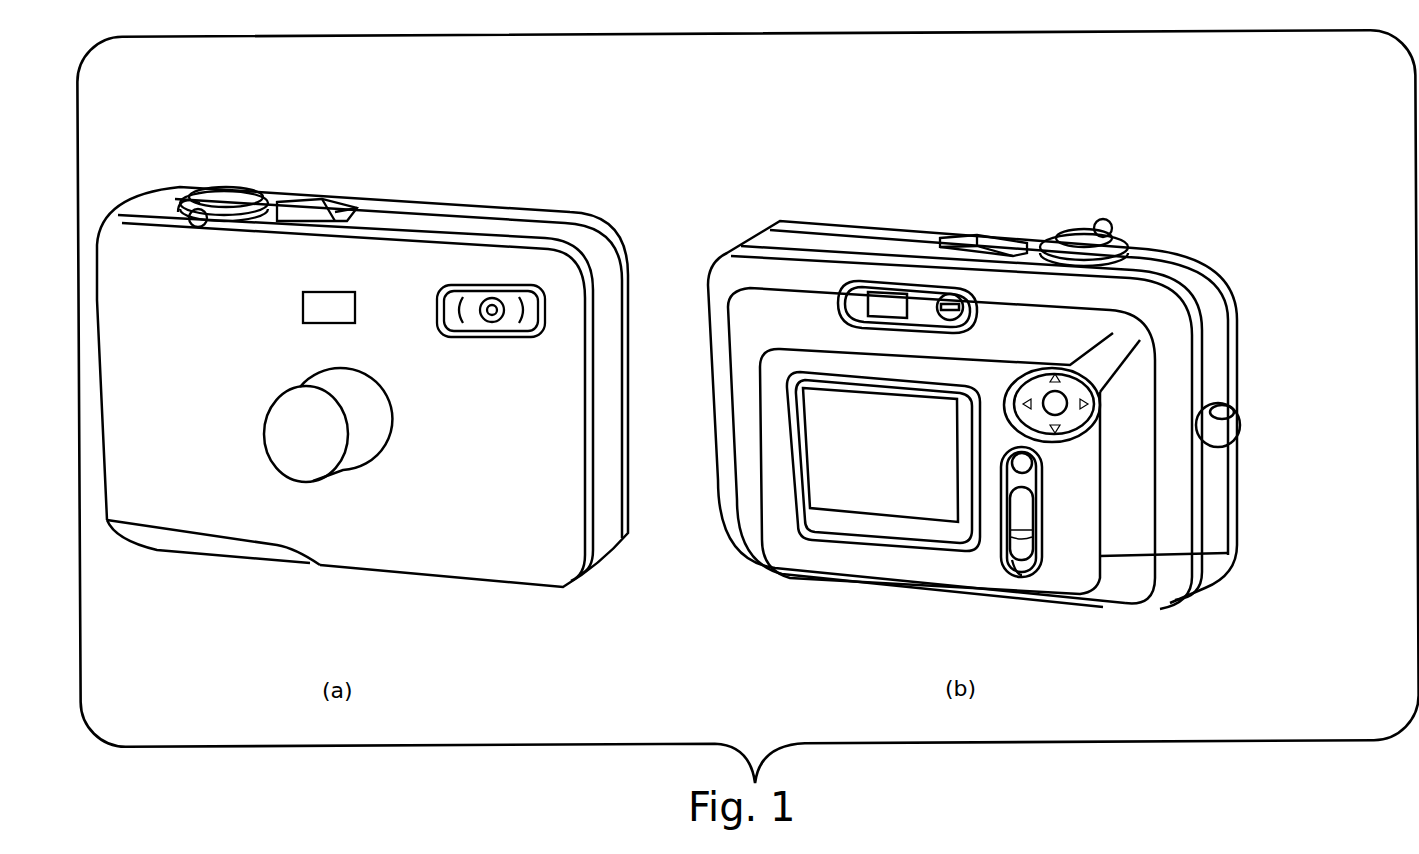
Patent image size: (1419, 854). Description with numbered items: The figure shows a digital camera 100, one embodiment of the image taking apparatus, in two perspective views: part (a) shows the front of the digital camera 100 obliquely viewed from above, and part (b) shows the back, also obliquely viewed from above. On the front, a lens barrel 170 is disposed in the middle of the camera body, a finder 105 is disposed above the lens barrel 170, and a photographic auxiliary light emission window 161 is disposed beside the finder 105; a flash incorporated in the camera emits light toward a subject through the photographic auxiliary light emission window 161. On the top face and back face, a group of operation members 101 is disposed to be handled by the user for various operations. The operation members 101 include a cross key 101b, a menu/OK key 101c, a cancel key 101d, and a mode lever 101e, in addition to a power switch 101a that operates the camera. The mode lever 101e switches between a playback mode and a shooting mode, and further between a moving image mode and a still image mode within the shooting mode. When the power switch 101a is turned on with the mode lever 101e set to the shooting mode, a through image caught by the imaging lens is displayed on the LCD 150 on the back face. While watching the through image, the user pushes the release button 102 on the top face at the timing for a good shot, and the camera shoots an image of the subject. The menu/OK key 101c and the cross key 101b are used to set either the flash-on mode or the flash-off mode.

The digital camera 100 is at (390, 140).
The operation members 101 is at (1320, 101).
The power switch 101a is at (302, 203).
The cross key 101b is at (1080, 422).
The menu/OK key 101c is at (1020, 495).
The cancel key 101d is at (1040, 600).
The mode lever 101e is at (182, 202).
The release button 102 is at (218, 185).
The finder 105 is at (313, 304).
The LCD 150 is at (855, 485).
The photographic auxiliary light emission window 161 is at (540, 307).
The lens barrel 170 is at (337, 381).